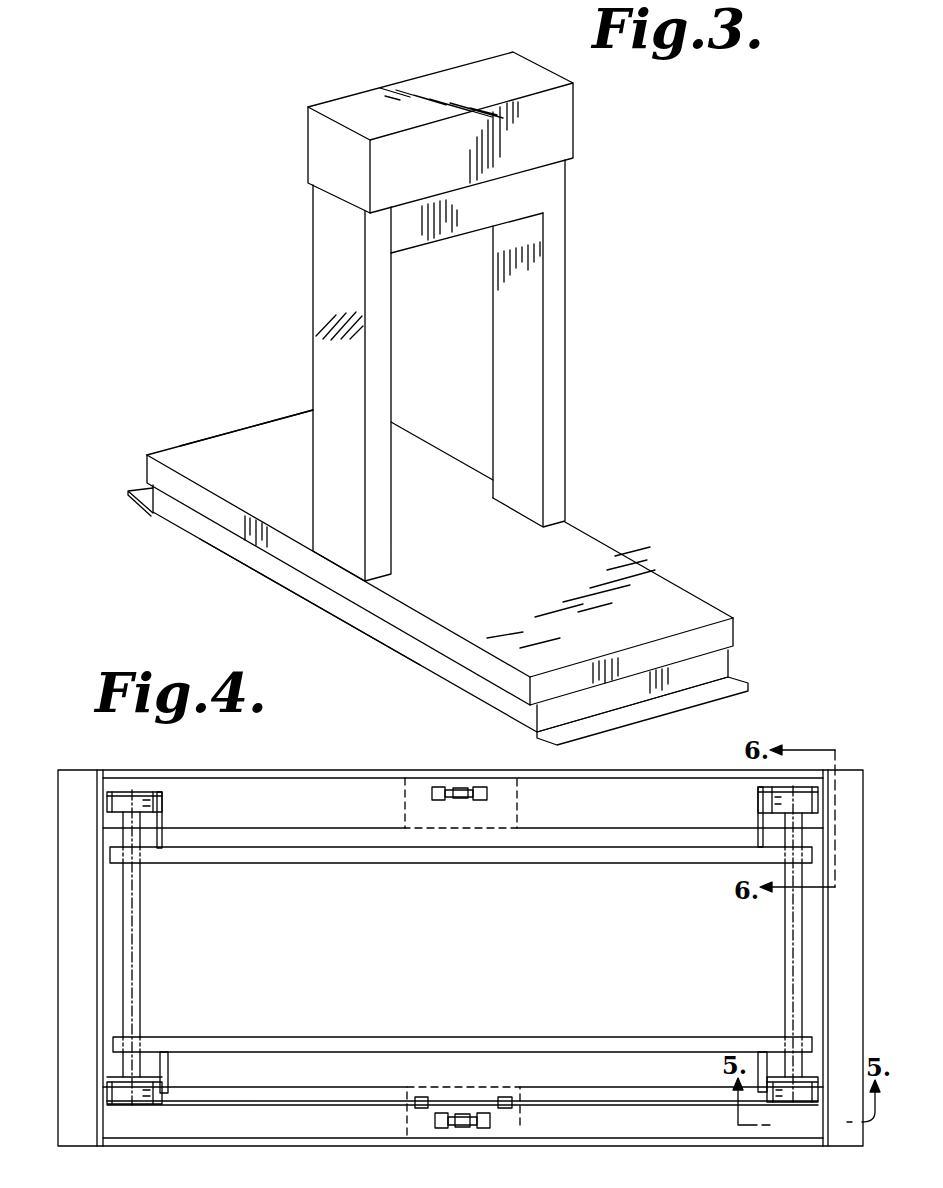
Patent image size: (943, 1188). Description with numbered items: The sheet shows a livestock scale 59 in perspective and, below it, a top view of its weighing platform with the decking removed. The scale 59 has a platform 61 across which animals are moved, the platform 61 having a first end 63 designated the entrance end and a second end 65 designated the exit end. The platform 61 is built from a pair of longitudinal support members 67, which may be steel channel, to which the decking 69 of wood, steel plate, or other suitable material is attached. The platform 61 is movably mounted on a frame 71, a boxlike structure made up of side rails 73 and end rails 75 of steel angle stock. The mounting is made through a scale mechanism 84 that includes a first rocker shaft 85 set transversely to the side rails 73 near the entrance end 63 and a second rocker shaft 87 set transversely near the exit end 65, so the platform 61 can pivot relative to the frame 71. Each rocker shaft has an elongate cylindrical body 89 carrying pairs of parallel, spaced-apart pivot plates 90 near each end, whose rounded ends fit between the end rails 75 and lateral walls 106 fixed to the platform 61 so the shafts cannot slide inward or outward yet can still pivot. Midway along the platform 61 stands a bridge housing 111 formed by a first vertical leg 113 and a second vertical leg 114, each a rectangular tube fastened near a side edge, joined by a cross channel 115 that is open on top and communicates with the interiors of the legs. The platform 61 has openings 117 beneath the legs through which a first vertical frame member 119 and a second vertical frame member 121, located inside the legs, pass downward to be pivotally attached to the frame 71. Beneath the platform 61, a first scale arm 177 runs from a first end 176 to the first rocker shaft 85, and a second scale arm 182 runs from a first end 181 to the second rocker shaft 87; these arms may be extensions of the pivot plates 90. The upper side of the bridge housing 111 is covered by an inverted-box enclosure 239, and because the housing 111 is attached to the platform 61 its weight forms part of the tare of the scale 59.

In FIG. 3, the livestock scale 59 is at (182, 136).
In FIG. 3, the enclosure 239 is at (575, 112).
In FIG. 3, the cross channel 115 is at (418, 254).
In FIG. 3, the first vertical leg 113 is at (391, 468).
In FIG. 3, the second vertical leg 114 is at (493, 404).
In FIG. 3, the bridge housing 111 is at (568, 377).
In FIG. 3, the decking 69 is at (272, 477).
In FIG. 3, the first end 63 is at (248, 428).
In FIG. 3, the platform 61 is at (147, 470).
In FIG. 3, the second end 65 is at (722, 633).
In FIG. 3, the frame 71 is at (196, 535).
In FIG. 4, the frame 71 is at (58, 946).
In FIG. 3, the side rails 73 is at (322, 608).
In FIG. 4, the side rails 73 is at (208, 772).
In FIG. 3, the end rails 75 is at (131, 493).
In FIG. 4, the end rails 75 is at (58, 1018).
In FIG. 4, the longitudinal support members 67 is at (258, 866).
In FIG. 4, the scale mechanism 84 is at (152, 892).
In FIG. 4, the first rocker shaft 85 is at (140, 946).
In FIG. 4, the cylindrical body 89 is at (145, 985).
In FIG. 4, the second rocker shaft 87 is at (790, 968).
In FIG. 4, the pivot plates 90 is at (147, 795).
In FIG. 4, the lateral walls 106 is at (163, 801).
In FIG. 4, the openings 117 is at (516, 824).
In FIG. 4, the second vertical frame member 121 is at (432, 790).
In FIG. 4, the first vertical frame member 119 is at (441, 1130).
In FIG. 4, the first end of first scale arm 176 is at (437, 1097).
In FIG. 4, the first end of second scale arm 181 is at (500, 1097).
In FIG. 4, the first scale arm 177 is at (193, 1107).
In FIG. 4, the second scale arm 182 is at (640, 1104).